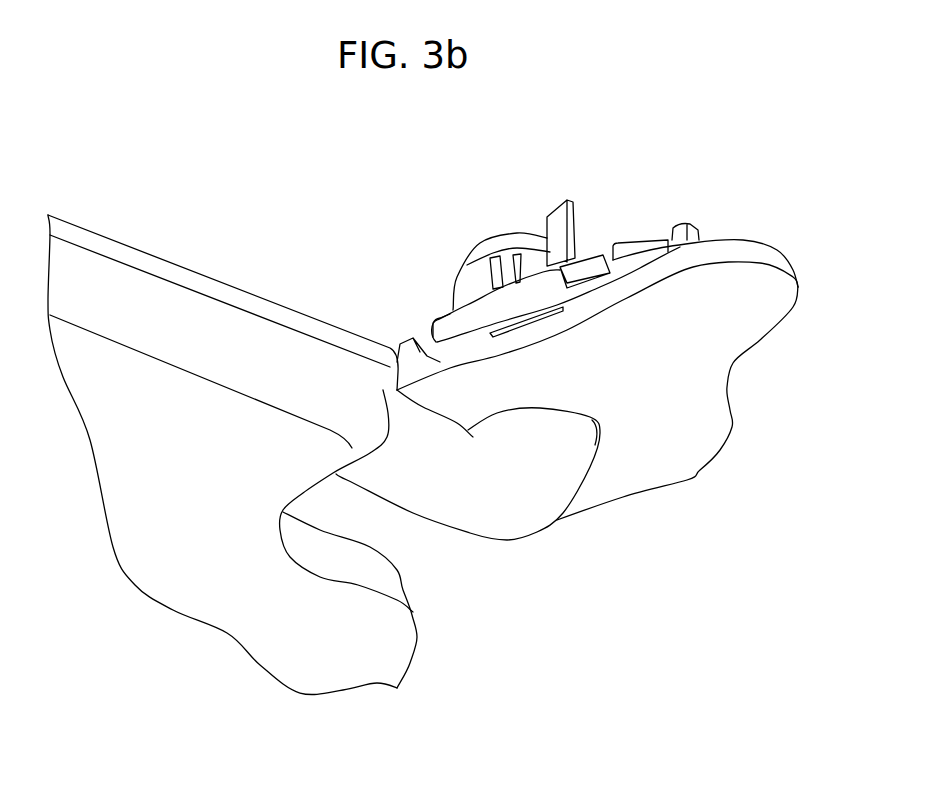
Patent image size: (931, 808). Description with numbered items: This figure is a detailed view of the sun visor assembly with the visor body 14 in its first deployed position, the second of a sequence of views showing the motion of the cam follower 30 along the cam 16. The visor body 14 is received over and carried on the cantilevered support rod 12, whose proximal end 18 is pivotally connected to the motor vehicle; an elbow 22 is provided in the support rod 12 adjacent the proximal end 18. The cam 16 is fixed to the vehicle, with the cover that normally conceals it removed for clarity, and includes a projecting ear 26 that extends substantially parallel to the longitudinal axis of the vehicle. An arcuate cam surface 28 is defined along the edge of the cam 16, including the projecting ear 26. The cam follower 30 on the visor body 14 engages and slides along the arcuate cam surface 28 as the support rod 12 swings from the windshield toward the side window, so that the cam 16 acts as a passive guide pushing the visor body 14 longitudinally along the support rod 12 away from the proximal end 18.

The support rod 12 is at (417, 483).
The visor body 14 is at (223, 449).
The cam 16 is at (613, 384).
The proximal end 18 is at (505, 245).
The elbow 22 is at (517, 532).
The projecting ear 26 is at (735, 287).
The arcuate cam surface 28 is at (428, 347).
The cam follower 30 is at (327, 333).